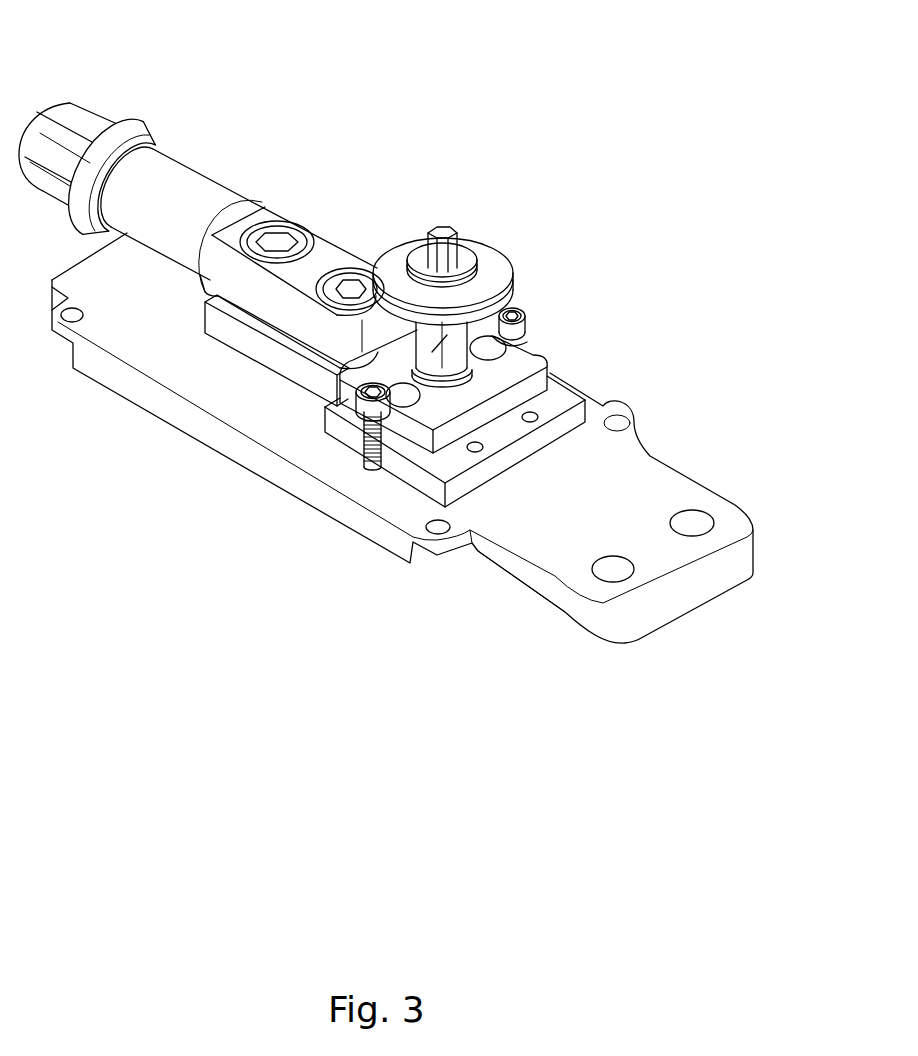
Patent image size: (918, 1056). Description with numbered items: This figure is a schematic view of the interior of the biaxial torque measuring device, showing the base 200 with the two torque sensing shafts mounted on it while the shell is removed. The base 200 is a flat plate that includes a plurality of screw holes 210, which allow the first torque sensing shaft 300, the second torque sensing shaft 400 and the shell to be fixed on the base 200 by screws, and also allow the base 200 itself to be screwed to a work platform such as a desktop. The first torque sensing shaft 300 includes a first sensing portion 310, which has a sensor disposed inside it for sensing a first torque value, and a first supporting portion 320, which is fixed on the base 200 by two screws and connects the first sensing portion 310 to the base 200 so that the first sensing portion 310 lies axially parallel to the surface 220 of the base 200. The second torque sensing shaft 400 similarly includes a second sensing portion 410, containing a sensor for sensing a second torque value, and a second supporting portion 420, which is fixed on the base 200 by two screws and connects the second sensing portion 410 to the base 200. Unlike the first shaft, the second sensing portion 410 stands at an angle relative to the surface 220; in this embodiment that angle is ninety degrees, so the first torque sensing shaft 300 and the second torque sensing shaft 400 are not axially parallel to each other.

The base 200 is at (680, 595).
The screw holes 210 is at (694, 510).
The surface of the base 220 is at (566, 543).
The first torque sensing shaft 300 is at (196, 192).
The first sensing portion 310 is at (68, 112).
The first supporting portion 320 is at (330, 257).
The second torque sensing shaft 400 is at (453, 344).
The second sensing portion 410 is at (441, 226).
The second supporting portion 420 is at (520, 391).